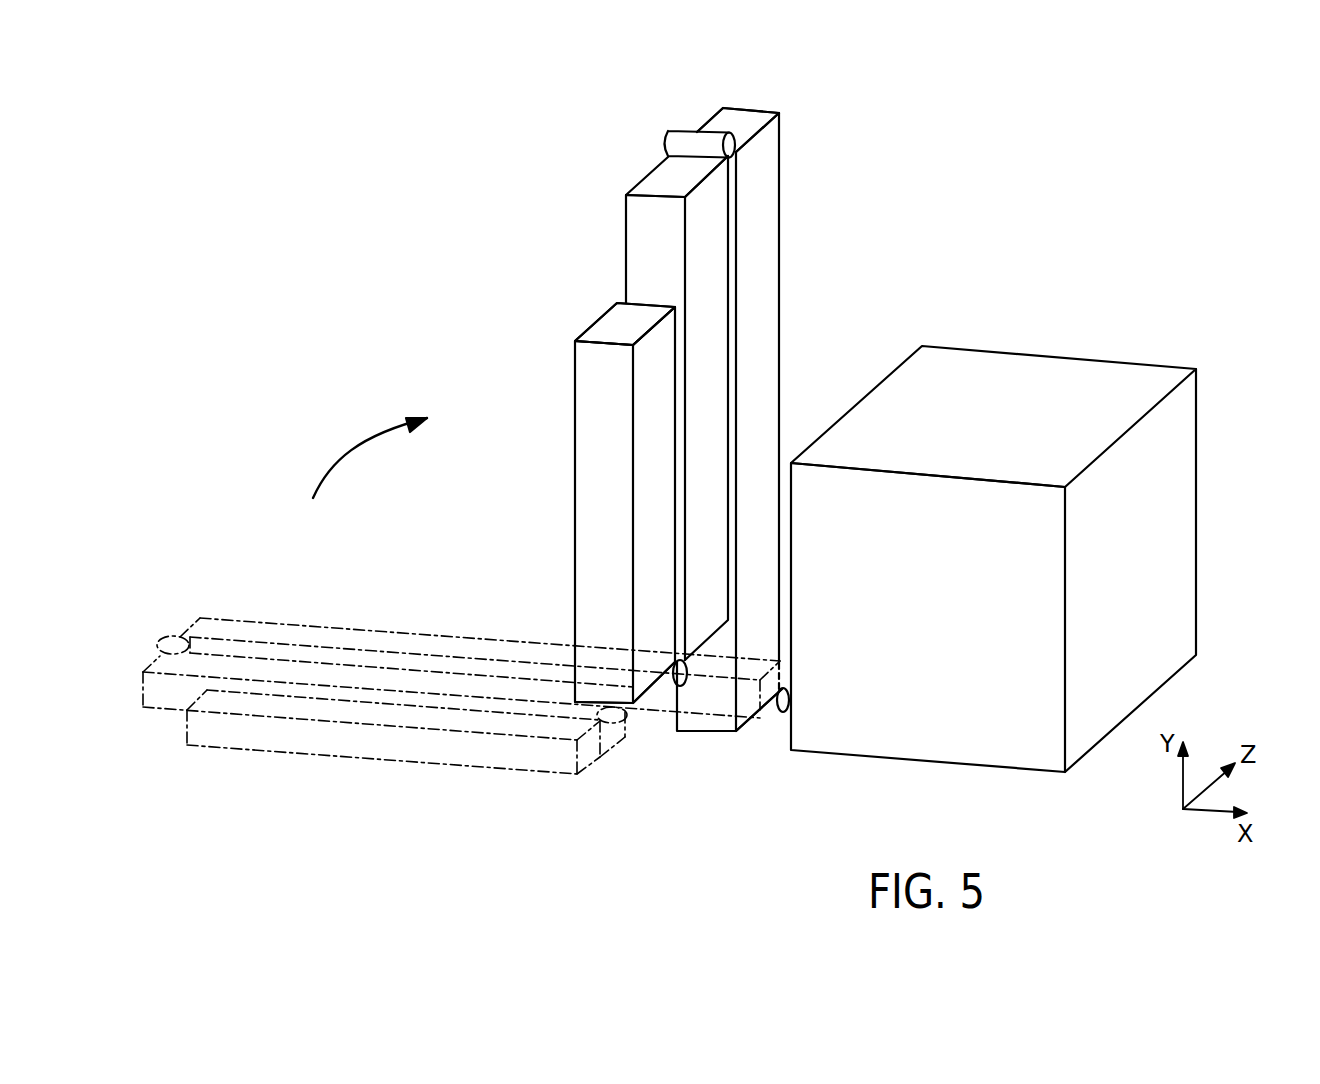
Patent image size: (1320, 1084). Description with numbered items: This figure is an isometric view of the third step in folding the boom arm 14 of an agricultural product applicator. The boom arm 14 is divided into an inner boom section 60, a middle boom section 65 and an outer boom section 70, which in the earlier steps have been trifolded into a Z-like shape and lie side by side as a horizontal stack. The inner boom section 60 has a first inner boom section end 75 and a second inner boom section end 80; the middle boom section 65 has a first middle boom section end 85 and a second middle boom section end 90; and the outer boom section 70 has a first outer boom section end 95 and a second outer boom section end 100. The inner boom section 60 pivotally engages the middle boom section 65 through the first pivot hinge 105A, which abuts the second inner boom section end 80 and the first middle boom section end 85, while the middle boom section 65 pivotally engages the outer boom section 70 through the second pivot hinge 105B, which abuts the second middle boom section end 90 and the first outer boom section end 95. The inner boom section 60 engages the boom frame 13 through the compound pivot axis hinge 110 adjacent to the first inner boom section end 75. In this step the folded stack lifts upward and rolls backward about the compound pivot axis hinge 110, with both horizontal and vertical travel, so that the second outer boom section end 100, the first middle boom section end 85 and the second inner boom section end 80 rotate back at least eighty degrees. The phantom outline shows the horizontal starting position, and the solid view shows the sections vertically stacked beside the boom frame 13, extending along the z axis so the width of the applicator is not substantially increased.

The boom frame 13 is at (1197, 508).
The boom arm 14 is at (565, 560).
The inner boom section 60 is at (770, 407).
The middle boom section 65 is at (718, 454).
The outer boom section 70 is at (667, 501).
The first inner boom section end 75 is at (747, 722).
The second inner boom section end 80 is at (722, 118).
The first middle boom section end 85 is at (647, 172).
The second middle boom section end 90 is at (703, 645).
The first outer boom section end 95 is at (638, 701).
The second outer boom section end 100 is at (598, 324).
The first pivot hinge 105A is at (667, 137).
The second pivot hinge 105B is at (679, 686).
The compound pivot axis hinge 110 is at (768, 708).